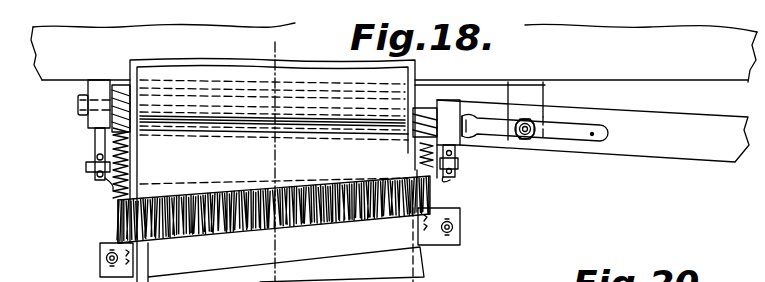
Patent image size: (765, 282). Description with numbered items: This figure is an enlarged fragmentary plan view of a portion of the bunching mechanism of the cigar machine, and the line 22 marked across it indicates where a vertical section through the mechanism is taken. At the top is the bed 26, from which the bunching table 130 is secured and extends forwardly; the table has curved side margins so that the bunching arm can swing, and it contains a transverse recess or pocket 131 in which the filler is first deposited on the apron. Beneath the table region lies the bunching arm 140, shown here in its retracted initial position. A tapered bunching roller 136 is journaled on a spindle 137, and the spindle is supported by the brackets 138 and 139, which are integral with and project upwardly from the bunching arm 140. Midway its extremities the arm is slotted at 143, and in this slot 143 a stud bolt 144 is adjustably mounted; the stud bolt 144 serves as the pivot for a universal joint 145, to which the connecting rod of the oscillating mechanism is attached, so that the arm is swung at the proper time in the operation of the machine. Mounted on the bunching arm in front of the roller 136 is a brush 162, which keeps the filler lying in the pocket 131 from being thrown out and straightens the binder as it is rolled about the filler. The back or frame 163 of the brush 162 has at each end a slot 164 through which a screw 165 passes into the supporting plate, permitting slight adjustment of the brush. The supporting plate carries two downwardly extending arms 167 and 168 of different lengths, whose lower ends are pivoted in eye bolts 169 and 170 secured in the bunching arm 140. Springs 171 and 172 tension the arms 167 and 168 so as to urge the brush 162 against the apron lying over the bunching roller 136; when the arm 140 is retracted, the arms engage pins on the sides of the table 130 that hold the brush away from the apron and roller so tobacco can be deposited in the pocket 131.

The section line 22— 22 is at (290, 48).
The bed 26 is at (394, 54).
The bunching table 130 is at (422, 262).
The transverse recess or pocket 131 is at (272, 171).
The tapered bunching roller 136 is at (422, 107).
The spindle 137 is at (78, 106).
The bracket 138 is at (452, 108).
The bracket 139 is at (136, 50).
The bunching arm 140 is at (720, 145).
The slot 143 is at (595, 132).
The stud bolt 144 is at (527, 142).
The universal joint 145 is at (548, 96).
The brush 162 is at (346, 162).
The back or frame of the brush 163 is at (286, 255).
The slot 164 is at (100, 248).
The screw 165 is at (108, 262).
The arm 167 is at (118, 226).
The arm 168 is at (450, 172).
The eye bolt 169 is at (95, 150).
The eye bolt 170 is at (463, 152).
The spring 171 is at (115, 190).
The spring 172 is at (421, 156).